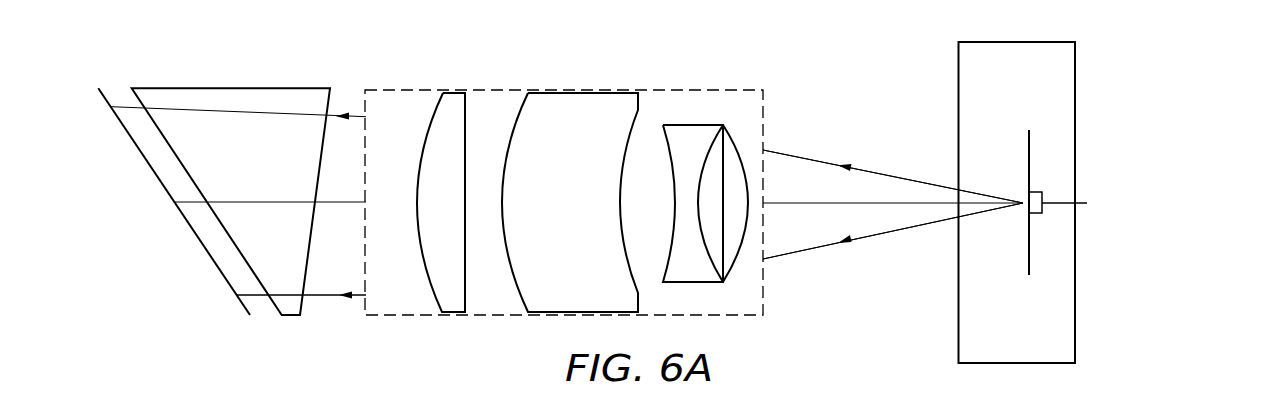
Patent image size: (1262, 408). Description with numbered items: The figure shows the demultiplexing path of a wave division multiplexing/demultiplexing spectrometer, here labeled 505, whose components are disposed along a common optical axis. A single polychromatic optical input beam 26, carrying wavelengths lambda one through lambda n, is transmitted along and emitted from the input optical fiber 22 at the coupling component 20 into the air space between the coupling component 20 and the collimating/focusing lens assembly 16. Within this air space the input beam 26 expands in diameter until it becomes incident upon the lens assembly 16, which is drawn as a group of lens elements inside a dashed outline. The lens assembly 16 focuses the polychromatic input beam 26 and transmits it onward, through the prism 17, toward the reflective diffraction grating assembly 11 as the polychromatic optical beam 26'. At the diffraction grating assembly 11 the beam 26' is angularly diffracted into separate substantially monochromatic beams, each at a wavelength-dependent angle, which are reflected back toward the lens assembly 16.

The optical scanning system 505 is at (141, 48).
The prism 17 is at (253, 98).
The reflective diffraction grating assembly 11 is at (158, 180).
The polychromatic optical beam 26' is at (301, 326).
The collimating/focusing lens assembly 16 is at (765, 72).
The polychromatic optical input beam 26 is at (893, 178).
The coupling component 20 is at (1033, 190).
The input optical fiber 22 is at (1080, 200).